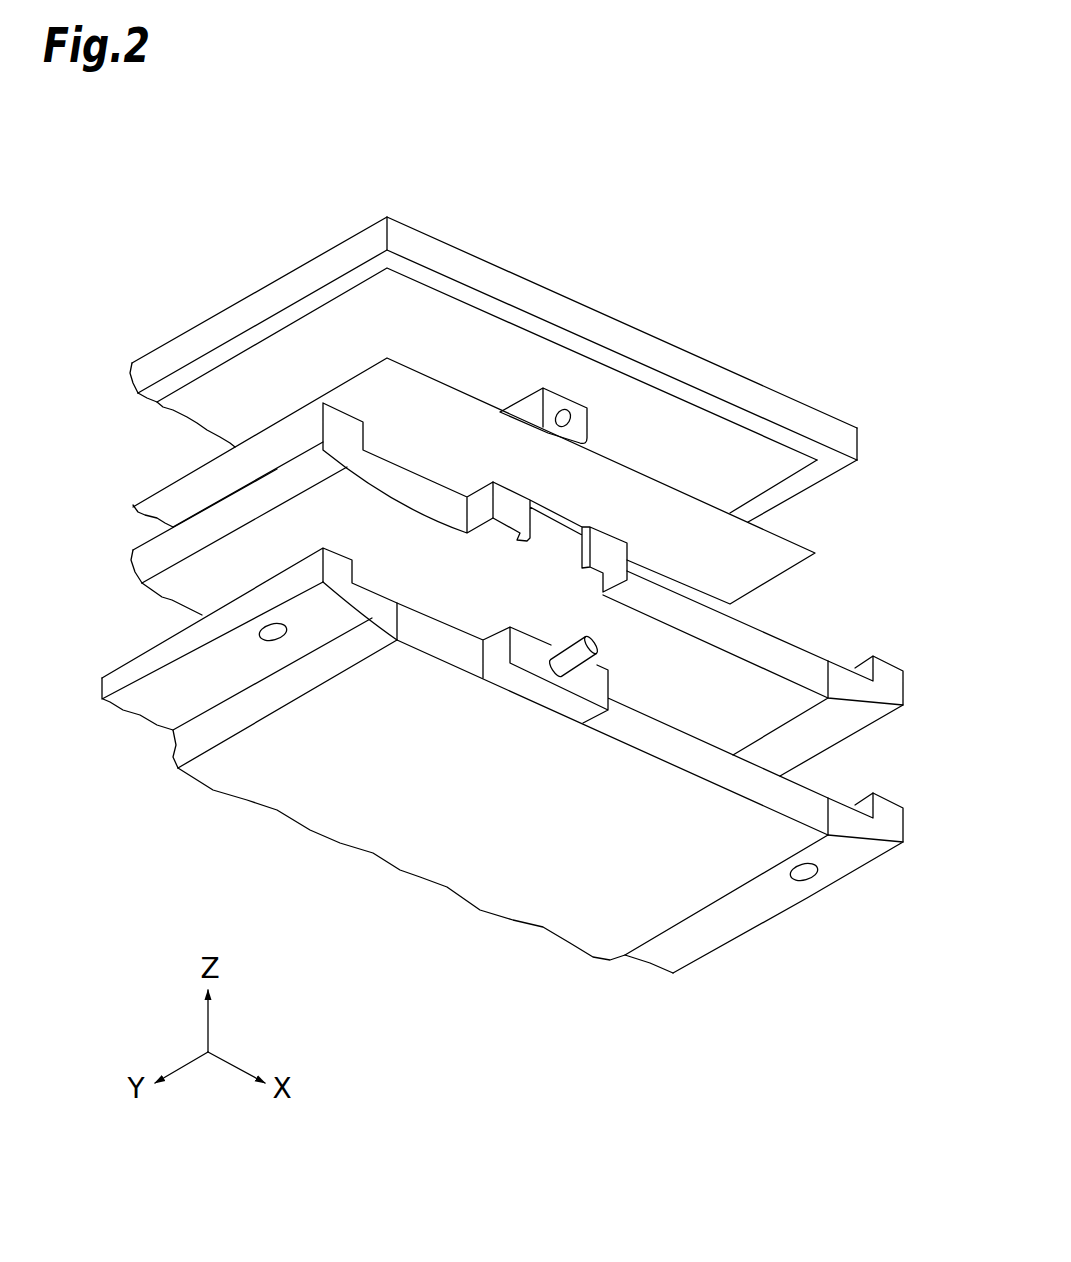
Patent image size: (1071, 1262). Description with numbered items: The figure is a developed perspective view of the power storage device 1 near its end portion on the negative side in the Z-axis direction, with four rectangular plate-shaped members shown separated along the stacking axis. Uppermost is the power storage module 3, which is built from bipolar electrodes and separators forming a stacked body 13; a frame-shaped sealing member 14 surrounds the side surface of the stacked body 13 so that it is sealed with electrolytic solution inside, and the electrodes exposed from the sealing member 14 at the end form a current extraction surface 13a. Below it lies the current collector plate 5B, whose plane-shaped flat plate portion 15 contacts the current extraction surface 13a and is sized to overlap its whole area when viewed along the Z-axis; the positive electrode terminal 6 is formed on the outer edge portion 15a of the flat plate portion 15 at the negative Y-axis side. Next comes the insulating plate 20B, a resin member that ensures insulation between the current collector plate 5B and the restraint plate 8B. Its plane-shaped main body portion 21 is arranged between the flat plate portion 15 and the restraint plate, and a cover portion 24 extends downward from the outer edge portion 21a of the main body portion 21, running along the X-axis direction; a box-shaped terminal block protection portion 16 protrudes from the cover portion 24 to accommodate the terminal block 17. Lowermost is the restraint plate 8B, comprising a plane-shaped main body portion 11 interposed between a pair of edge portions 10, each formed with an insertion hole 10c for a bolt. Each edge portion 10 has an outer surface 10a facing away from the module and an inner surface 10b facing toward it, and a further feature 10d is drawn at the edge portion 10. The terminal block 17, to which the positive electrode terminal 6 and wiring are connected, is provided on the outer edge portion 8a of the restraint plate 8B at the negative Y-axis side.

The power storage device 1 is at (185, 200).
The power storage module 3 is at (857, 422).
The current collector plate 5B is at (163, 477).
The positive electrode terminal 6 is at (527, 382).
The restraint plate 8B is at (168, 753).
The outer edge portion 8a is at (787, 797).
The edge portion 10 is at (170, 699).
The outer surface 10a is at (758, 902).
The inner surface 10b is at (889, 800).
The insertion hole 10c is at (273, 635).
The engaging projection 10d is at (863, 808).
The main body portion 11 is at (422, 830).
The stacked body 13 is at (347, 328).
The current extraction surface 13a is at (632, 404).
The sealing member 14 is at (785, 393).
The flat plate portion 15 is at (750, 558).
The outer edge portion 15a is at (680, 494).
The terminal block protection portion 16 is at (522, 548).
The terminal block 17 is at (548, 693).
The insulating plate 20B is at (128, 570).
The main body portion 21 is at (775, 702).
The outer edge portion 21a is at (770, 627).
The cover portion 24 is at (777, 657).